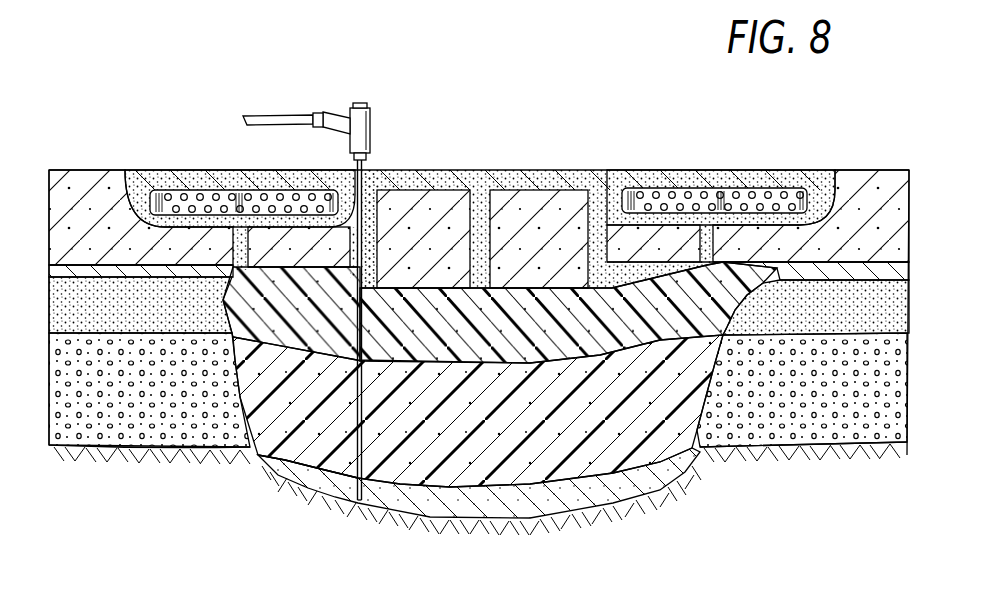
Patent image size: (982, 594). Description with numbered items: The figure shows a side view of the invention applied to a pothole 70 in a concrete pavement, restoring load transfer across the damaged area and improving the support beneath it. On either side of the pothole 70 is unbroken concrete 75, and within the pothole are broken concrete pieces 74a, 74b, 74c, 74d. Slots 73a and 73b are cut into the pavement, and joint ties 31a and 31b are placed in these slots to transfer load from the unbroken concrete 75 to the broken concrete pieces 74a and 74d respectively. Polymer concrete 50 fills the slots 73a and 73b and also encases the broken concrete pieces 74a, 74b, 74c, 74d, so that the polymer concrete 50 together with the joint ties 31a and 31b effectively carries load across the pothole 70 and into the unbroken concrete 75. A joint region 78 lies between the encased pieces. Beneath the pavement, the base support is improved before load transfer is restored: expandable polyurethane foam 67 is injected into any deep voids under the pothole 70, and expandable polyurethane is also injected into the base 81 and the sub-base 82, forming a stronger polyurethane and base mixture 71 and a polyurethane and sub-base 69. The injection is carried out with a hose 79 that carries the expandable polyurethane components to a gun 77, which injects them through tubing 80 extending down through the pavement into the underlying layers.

The pothole 70 is at (597, 93).
The polymer concrete 50 is at (612, 195).
The unbroken concrete 75 is at (75, 187).
The slot 73a is at (219, 178).
The slot 73b is at (792, 178).
The joint tie 31a is at (152, 187).
The joint tie 31b is at (744, 178).
The broken concrete piece 74a is at (303, 243).
The broken concrete piece 74b is at (423, 220).
The broken concrete piece 74c is at (537, 218).
The broken concrete piece 74d is at (657, 226).
The joint filler 78 is at (383, 178).
The gun 77 is at (370, 118).
The hose 79 is at (280, 115).
The tubing 80 is at (358, 512).
The polyurethane and base mixture 71 is at (530, 340).
The expandable polyurethane foam 67 is at (610, 498).
The polyurethane and sub-base 69 is at (268, 457).
The base 81 is at (869, 307).
The sub-base 82 is at (800, 423).